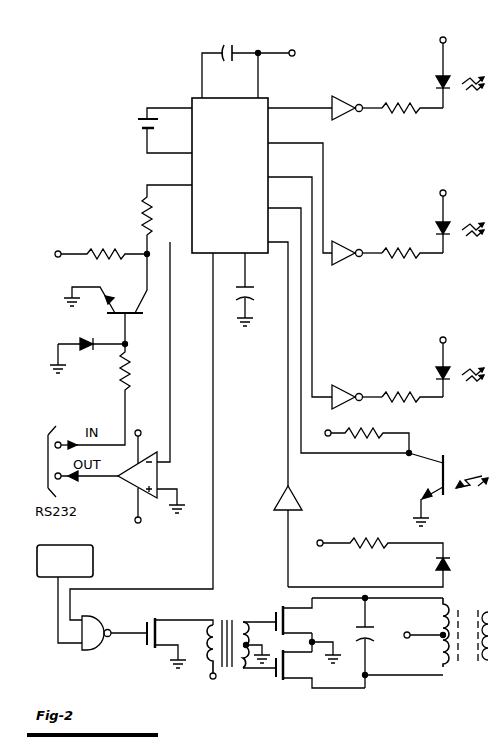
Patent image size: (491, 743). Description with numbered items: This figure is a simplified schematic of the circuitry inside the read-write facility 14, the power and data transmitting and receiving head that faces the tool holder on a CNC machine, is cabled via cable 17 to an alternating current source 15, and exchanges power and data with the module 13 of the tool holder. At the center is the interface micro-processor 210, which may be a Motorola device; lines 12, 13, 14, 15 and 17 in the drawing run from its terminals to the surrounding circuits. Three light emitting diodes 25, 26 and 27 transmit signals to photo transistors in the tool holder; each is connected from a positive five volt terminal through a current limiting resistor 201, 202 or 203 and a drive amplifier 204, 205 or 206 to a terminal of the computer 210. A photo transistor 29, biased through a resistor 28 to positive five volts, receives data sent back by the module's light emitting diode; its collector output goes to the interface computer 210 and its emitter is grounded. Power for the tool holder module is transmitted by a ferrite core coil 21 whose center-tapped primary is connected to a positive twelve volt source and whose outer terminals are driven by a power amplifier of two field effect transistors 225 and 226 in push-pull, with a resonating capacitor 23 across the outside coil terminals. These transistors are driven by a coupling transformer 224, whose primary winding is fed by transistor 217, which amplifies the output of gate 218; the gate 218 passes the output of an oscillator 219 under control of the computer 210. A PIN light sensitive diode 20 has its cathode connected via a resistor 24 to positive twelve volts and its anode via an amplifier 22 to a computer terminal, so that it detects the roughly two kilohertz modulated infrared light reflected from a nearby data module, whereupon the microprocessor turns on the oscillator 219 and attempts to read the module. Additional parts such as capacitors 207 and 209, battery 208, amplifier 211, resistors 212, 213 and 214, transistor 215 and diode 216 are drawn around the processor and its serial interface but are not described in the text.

The output line 12 is at (290, 140).
The module 13 is at (290, 105).
The read-write facility 14 is at (285, 174).
The alternating current source 15 is at (279, 205).
The cable 17 is at (286, 438).
The PIN light sensitive diode 20 is at (436, 568).
The ferrite core coil 21 is at (452, 672).
The amplifier 22 is at (293, 496).
The resonating capacitor 23 is at (355, 634).
The resistor 24 is at (369, 542).
The light emitting diode 25 is at (433, 373).
The light emitting diode 26 is at (435, 228).
The light emitting diode 27 is at (435, 82).
The resistor 28 is at (380, 429).
The photo transistor 29 is at (440, 478).
The current limiting resistor 201 is at (338, 386).
The current limiting resistor 202 is at (338, 242).
The current limiting resistor 203 is at (338, 97).
The drive amplifier 204 is at (412, 402).
The drive amplifier 205 is at (398, 258).
The drive amplifier 206 is at (398, 113).
The capacitor 207 is at (225, 52).
The battery 208 is at (136, 120).
The capacitor 209 is at (262, 296).
The interface micro-processor 210 is at (243, 166).
The line driver amplifier 211 is at (158, 477).
The resistor 212 is at (141, 211).
The resistor 213 is at (112, 248).
The resistor 214 is at (124, 370).
The transistor 215 is at (123, 296).
The diode 216 is at (90, 341).
The transistor 217 is at (148, 620).
The gate 218 is at (89, 617).
The oscillator 219 is at (93, 557).
The coupling transformer 224 is at (230, 618).
The field effect transistor 225 is at (283, 611).
The field effect transistor 226 is at (281, 680).